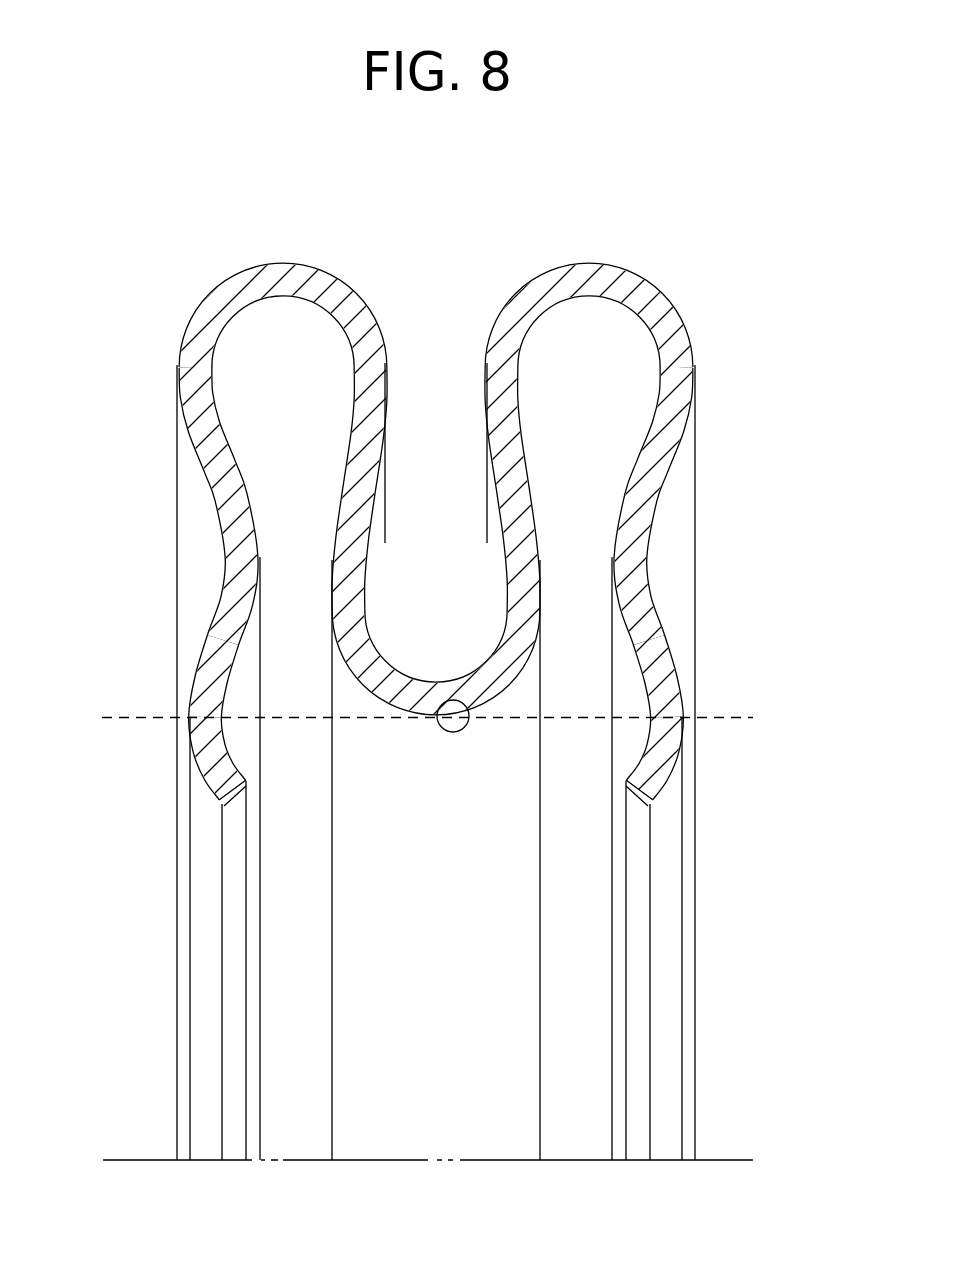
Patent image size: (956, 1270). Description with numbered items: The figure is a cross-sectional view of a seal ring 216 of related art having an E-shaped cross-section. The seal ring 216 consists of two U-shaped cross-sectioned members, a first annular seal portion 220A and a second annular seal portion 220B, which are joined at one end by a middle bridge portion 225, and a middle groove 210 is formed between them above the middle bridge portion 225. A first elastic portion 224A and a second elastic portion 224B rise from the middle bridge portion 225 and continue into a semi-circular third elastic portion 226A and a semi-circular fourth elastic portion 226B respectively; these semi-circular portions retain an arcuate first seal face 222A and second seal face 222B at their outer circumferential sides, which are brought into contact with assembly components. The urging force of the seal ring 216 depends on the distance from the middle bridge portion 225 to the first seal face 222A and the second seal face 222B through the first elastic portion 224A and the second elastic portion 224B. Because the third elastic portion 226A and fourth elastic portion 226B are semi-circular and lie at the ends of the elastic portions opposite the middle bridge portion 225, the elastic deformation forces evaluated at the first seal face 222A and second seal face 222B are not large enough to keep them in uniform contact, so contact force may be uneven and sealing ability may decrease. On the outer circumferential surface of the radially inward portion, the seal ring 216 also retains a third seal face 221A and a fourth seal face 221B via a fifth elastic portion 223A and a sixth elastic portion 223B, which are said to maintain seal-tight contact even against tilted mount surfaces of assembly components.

The seal ring 216 is at (150, 243).
The middle groove 210 is at (434, 447).
The first annular seal portion 220A is at (195, 764).
The second annular seal portion 220B is at (678, 757).
The third seal face 221A is at (188, 716).
The fourth seal face 221B is at (683, 714).
The first seal face 222A is at (177, 371).
The second seal face 222B is at (695, 361).
The fifth elastic portion 223A is at (225, 573).
The sixth elastic portion 223B is at (645, 568).
The first elastic portion 224A is at (343, 470).
The second elastic portion 224B is at (530, 470).
The middle bridge portion 225 is at (462, 703).
The third elastic portion 226A is at (283, 262).
The fourth elastic portion 226B is at (589, 262).